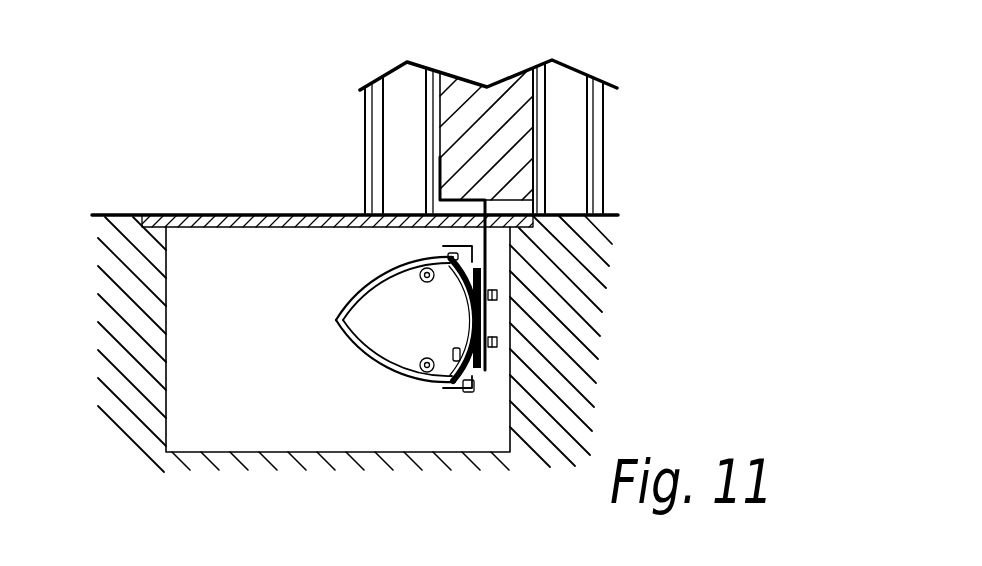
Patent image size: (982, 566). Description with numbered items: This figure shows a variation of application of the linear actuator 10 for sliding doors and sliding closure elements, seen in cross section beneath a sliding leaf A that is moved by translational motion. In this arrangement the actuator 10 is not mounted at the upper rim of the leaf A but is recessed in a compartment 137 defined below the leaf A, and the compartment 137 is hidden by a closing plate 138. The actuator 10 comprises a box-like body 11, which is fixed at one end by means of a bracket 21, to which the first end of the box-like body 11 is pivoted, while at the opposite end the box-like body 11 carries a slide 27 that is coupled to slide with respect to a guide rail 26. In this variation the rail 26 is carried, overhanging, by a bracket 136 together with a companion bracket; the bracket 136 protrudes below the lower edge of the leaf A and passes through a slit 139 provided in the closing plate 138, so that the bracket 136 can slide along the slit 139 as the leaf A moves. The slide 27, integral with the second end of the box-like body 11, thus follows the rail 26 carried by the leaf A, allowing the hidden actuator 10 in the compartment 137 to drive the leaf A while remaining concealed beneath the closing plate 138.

The leaf A is at (498, 110).
The bracket 136 is at (438, 158).
The linear actuator 10 is at (415, 325).
The closing plate 138 is at (188, 216).
The compartment 137 is at (195, 323).
The slit 139 is at (508, 232).
The guide rail 26 is at (483, 325).
The bracket 21 is at (481, 383).
The slide 27 is at (466, 393).
The box-like body 11 is at (342, 350).